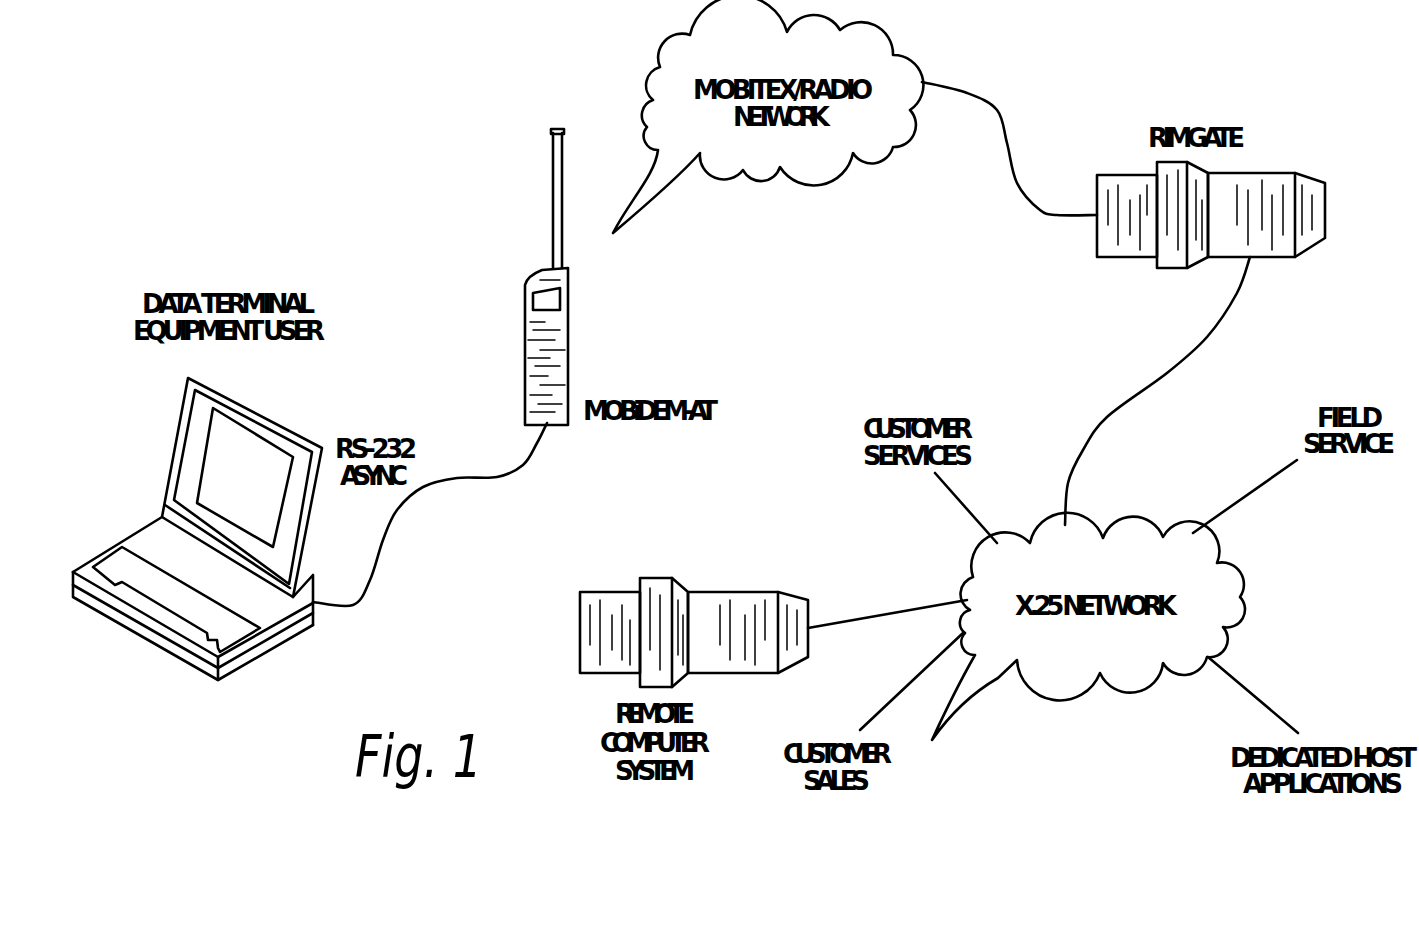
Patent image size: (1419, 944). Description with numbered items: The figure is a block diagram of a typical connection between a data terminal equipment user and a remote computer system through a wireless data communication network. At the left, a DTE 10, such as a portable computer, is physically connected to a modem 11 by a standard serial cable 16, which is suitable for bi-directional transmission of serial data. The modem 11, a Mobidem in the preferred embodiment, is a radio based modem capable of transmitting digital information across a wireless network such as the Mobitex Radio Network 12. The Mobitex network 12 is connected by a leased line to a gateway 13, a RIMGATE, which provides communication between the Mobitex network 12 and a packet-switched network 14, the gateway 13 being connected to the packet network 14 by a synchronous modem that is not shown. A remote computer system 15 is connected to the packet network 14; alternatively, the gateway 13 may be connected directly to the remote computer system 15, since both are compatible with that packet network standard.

The DTE 10 is at (148, 542).
The modem 11 is at (560, 343).
The Mobitex Radio Network 12 is at (898, 55).
The gateway 13 is at (1325, 210).
The X.25 network 14 is at (1240, 605).
The remote computer system 15 is at (733, 592).
The RS-232 cable 16 is at (498, 477).